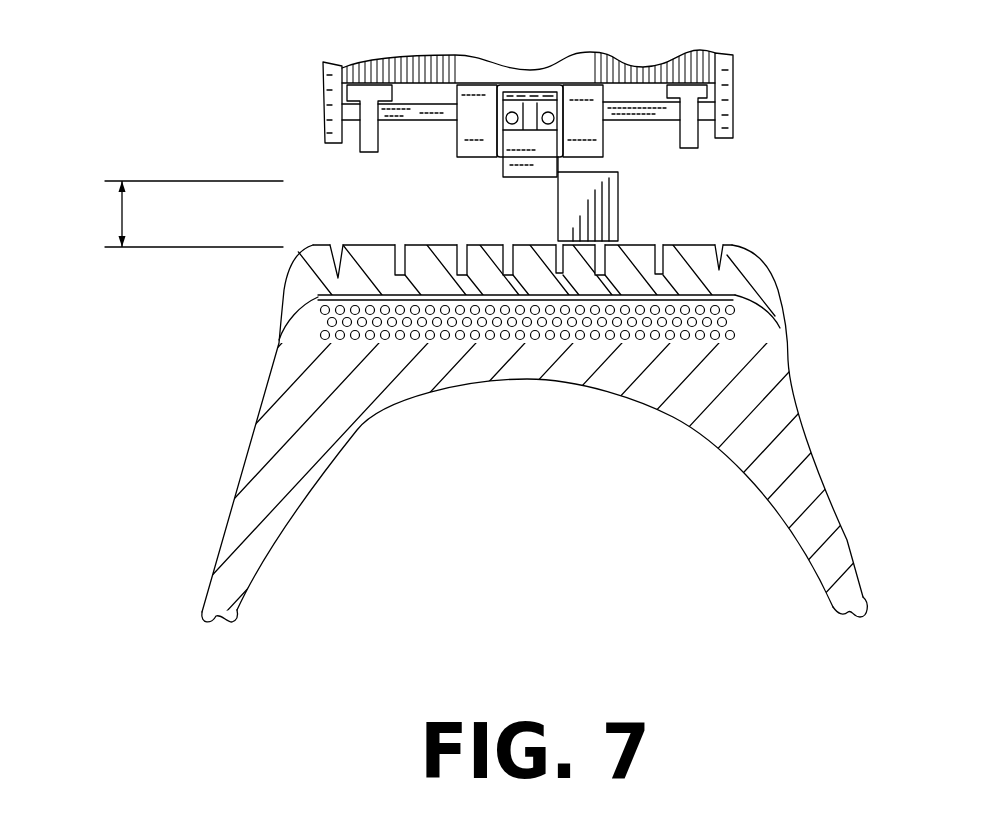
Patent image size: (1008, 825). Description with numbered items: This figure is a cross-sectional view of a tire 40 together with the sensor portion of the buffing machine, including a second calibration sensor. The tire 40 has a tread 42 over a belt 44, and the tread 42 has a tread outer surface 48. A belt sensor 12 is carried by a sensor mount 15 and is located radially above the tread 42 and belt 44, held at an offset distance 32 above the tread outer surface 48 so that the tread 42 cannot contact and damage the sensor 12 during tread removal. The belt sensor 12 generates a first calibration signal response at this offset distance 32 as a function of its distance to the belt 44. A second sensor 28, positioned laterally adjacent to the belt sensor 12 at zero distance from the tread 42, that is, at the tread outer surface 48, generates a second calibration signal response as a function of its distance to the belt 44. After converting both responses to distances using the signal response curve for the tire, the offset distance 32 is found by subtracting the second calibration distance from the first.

The sensor mount 15 is at (755, 77).
The belt sensor 12 is at (533, 172).
The second sensor 28 is at (617, 203).
The offset distance 32 is at (120, 216).
The tire 40 is at (222, 433).
The tread 42 is at (350, 242).
The belt 44 is at (760, 320).
The tread outer surface 48 is at (395, 244).